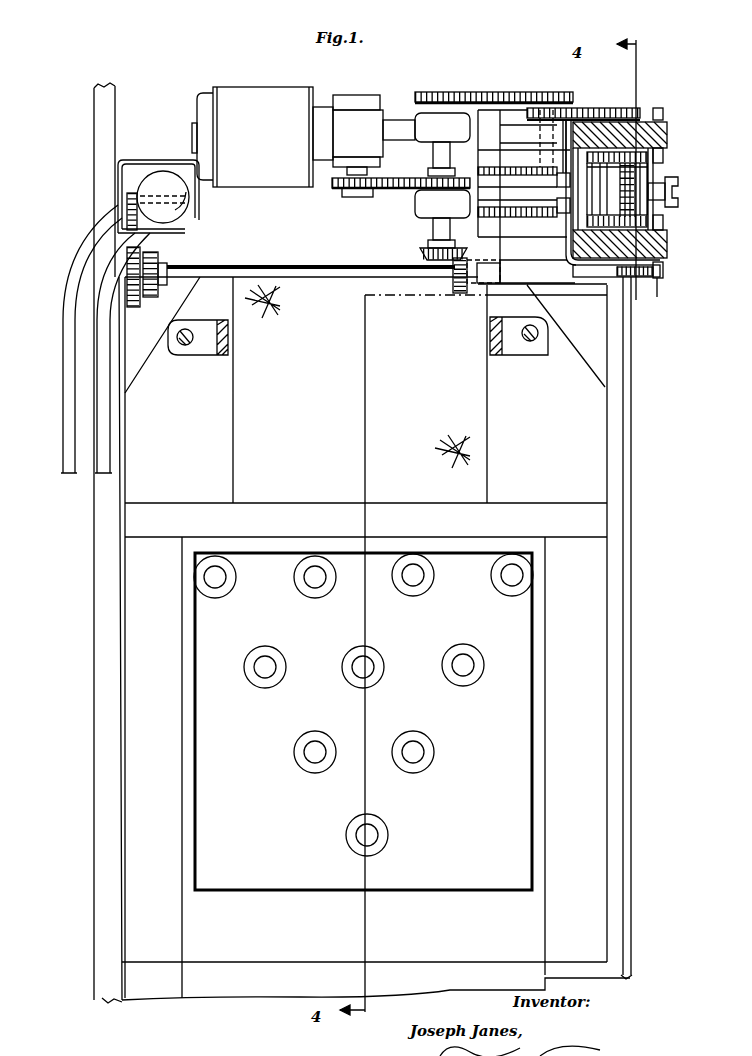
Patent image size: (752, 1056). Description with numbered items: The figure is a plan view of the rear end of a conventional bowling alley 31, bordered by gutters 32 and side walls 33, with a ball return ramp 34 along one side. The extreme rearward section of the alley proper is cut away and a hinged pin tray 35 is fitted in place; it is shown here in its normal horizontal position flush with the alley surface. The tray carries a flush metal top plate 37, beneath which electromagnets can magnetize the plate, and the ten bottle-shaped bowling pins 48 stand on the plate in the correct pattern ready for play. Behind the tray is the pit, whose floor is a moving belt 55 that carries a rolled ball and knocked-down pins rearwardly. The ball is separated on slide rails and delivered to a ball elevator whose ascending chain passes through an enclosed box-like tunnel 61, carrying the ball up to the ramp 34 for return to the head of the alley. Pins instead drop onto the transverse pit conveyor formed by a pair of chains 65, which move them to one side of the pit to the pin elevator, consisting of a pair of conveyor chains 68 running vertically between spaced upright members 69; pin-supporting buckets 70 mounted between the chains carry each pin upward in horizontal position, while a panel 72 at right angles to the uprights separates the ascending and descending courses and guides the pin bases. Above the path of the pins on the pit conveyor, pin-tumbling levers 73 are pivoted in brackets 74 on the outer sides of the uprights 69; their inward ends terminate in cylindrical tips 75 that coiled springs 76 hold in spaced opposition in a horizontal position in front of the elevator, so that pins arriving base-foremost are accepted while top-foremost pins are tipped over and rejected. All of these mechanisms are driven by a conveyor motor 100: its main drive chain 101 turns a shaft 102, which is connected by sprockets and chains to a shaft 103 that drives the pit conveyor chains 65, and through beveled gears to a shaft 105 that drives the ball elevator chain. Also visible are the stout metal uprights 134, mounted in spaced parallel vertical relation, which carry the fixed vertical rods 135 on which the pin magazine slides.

The bowling alley 31 is at (223, 977).
The gutters 32 is at (158, 977).
The side walls 33 is at (106, 870).
The ball return ramp 34 is at (100, 430).
The pin tray 35 is at (295, 937).
The metal top plate 37 is at (470, 867).
The bowling pins 48 is at (378, 657).
The moving belt 55 is at (250, 397).
The tunnel 61 is at (152, 160).
The chains 65 is at (530, 175).
The conveyor chains 68 is at (590, 215).
The upright members 69 is at (663, 135).
The buckets 70 is at (678, 192).
The panel 72 is at (632, 177).
The pin-tumbling levers 73 is at (645, 110).
The brackets 74 is at (660, 117).
The cylindrical tips 75 is at (552, 218).
The coiled springs 76 is at (645, 276).
The conveyor motor 100 is at (258, 108).
The main drive chain 101 is at (410, 188).
The shaft 102 is at (432, 166).
The shaft 103 is at (557, 178).
The shaft 105 is at (308, 274).
The uprights 134 is at (230, 340).
The rods 135 is at (187, 342).